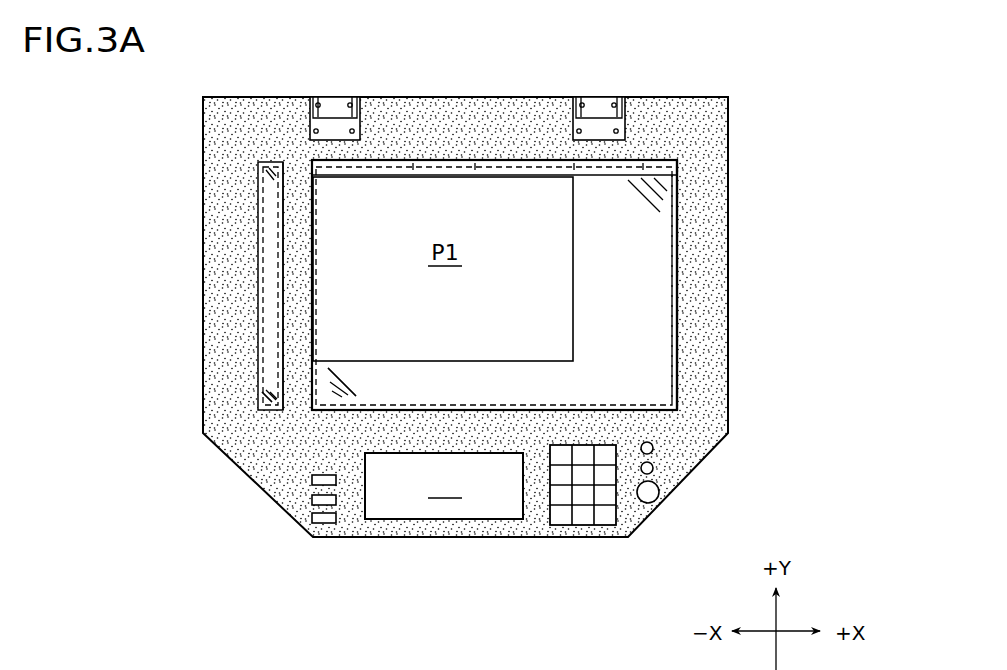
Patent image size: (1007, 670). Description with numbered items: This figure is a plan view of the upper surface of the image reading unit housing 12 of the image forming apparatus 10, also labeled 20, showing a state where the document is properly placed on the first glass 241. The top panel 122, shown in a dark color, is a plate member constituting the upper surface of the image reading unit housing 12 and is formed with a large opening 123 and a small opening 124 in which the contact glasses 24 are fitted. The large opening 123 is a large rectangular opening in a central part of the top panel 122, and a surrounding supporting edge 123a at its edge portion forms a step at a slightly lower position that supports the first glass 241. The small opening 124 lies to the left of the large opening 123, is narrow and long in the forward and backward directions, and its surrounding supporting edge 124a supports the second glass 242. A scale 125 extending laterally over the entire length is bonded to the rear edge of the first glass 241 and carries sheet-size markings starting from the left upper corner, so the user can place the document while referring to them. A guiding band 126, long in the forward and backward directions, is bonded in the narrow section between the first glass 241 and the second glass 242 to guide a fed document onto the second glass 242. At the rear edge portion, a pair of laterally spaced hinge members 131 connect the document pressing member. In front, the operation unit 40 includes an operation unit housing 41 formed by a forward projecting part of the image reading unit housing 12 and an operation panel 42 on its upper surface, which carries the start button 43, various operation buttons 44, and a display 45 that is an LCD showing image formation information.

The image forming apparatus 10 is at (547, 301).
The image reading device 20 is at (547, 301).
The image reading unit housing 12 is at (736, 245).
The top panel 122 is at (706, 222).
The large opening 123 is at (642, 340).
The surrounding supporting edge 123a is at (675, 303).
The small opening 124 is at (280, 274).
The surrounding supporting edge 124a is at (258, 333).
The scale 125 is at (657, 160).
The guiding band 126 is at (296, 216).
The hinge members 131 is at (597, 106).
The contact glasses 24 is at (201, 437).
The first glass 241 is at (330, 392).
The second glass 242 is at (268, 396).
The operation unit 40 is at (437, 529).
The operation unit housing 41 is at (463, 529).
The operation panel 42 is at (353, 527).
The start button 43 is at (650, 492).
The operation buttons 44 is at (653, 468).
The display 45 is at (444, 486).